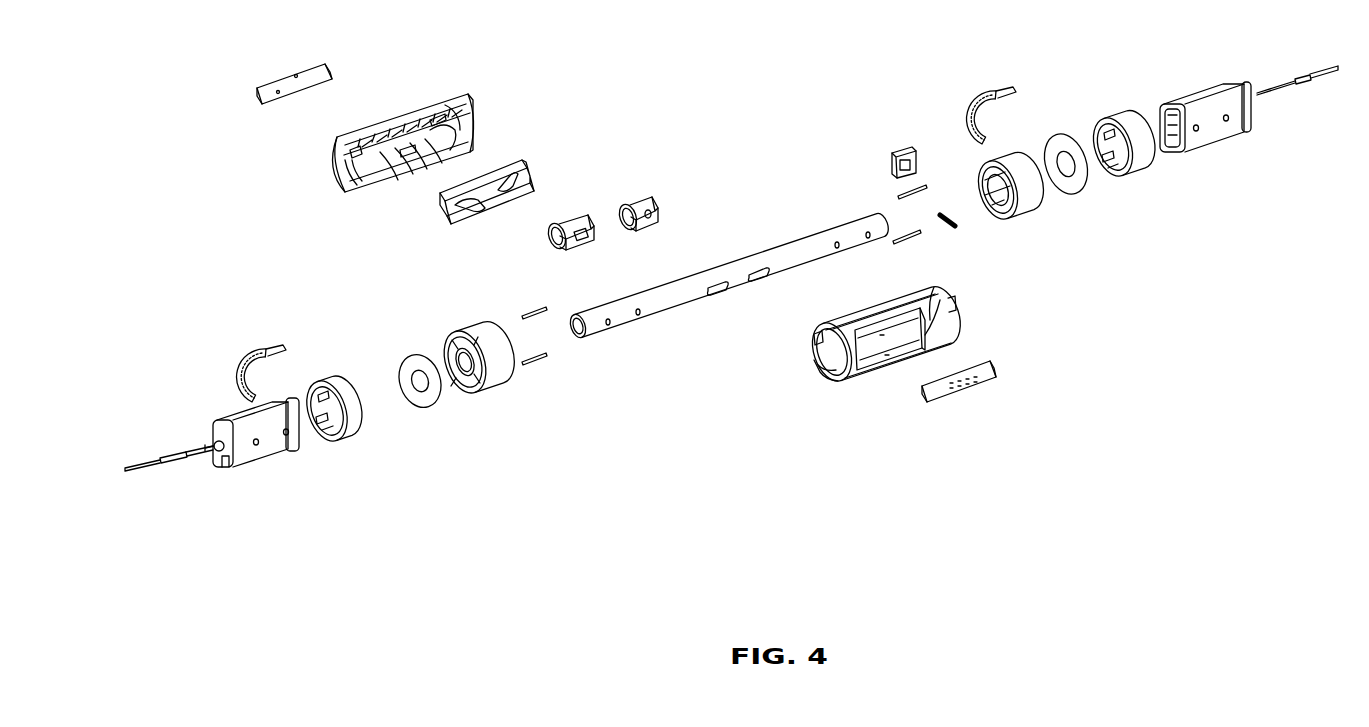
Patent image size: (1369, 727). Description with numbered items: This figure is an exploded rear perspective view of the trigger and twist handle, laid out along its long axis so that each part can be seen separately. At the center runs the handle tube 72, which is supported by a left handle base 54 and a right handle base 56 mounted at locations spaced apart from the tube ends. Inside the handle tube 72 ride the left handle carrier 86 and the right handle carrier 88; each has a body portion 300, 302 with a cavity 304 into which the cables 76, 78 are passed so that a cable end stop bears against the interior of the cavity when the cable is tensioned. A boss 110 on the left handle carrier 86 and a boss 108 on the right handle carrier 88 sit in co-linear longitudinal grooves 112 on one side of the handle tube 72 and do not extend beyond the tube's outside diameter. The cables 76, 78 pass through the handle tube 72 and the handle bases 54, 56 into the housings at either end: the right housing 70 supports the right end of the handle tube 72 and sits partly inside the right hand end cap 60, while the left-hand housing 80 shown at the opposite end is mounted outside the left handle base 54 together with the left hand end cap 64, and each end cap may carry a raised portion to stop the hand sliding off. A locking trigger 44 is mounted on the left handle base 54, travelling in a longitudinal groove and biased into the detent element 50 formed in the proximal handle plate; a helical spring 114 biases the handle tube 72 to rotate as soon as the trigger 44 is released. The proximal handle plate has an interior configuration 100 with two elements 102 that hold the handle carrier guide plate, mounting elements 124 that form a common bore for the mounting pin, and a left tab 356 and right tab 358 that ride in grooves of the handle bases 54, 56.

The locking trigger 44 is at (903, 151).
The proximal handle plate detent element 50 is at (813, 361).
The left handle base 54 is at (471, 326).
The right handle base 56 is at (1016, 158).
The right hand end cap 60 is at (1128, 113).
The left hand end cap 64 is at (327, 379).
The right housing 70 is at (1196, 99).
The handle tube 72 is at (728, 275).
The cable 76 is at (147, 464).
The cable 78 is at (1320, 74).
The end housing 80 is at (228, 426).
The left handle carrier 86 is at (568, 233).
The right handle carrier 88 is at (656, 215).
The interior configuration 100 is at (401, 155).
The elements 102 is at (353, 151).
The boss 108 is at (647, 228).
The boss 110 is at (587, 243).
The longitudinal grooves 112 is at (720, 280).
The helical spring 114 is at (948, 234).
The mounting elements 124 is at (911, 237).
The body portion 300 is at (575, 227).
The body portion 302 is at (646, 208).
The cavity 304 is at (547, 238).
The left tab 356 is at (814, 345).
The right tab 358 is at (956, 298).